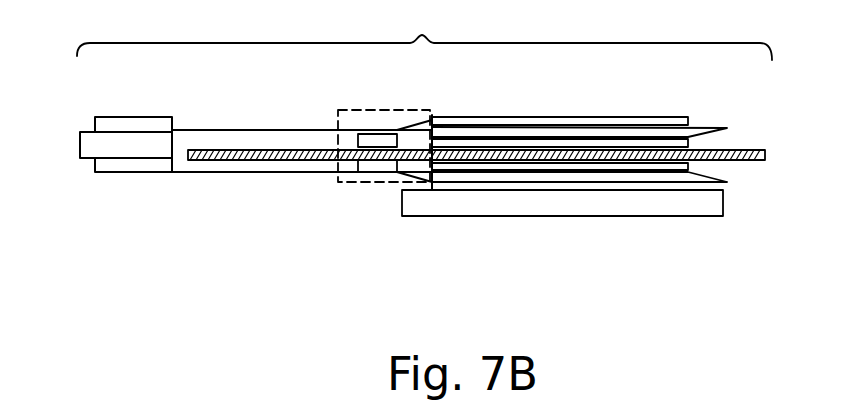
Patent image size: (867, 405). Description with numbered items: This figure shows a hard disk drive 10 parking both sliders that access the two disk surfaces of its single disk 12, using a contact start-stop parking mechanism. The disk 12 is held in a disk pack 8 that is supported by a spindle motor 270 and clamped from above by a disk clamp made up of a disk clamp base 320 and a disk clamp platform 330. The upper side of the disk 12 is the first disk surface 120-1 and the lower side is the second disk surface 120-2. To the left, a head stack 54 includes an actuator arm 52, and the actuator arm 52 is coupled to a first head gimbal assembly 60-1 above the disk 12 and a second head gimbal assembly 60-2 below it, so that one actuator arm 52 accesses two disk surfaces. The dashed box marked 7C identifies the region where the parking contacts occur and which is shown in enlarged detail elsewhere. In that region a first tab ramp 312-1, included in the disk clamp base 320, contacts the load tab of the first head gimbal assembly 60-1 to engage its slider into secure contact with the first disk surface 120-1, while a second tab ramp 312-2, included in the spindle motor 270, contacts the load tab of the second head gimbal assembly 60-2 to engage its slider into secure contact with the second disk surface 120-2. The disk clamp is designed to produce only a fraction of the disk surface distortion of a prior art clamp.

The hard disk drive 10 is at (424, 31).
The disk pack 8 is at (772, 273).
The disk 12 is at (768, 162).
The actuator arm 52 is at (126, 146).
The head stack 54 is at (168, 178).
The first head gimbal assembly 60-1 is at (420, 108).
The second head gimbal assembly 60-2 is at (420, 222).
The detail region of FIG. 7C is at (370, 183).
The disk clamp platform 330 is at (560, 117).
The first tab ramp 312-1 is at (738, 102).
The disk clamp base 320 is at (609, 106).
The first disk surface 120-1 is at (745, 141).
The second disk surface 120-2 is at (727, 178).
The second tab ramp 312-2 is at (730, 182).
The spindle motor 270 is at (542, 216).